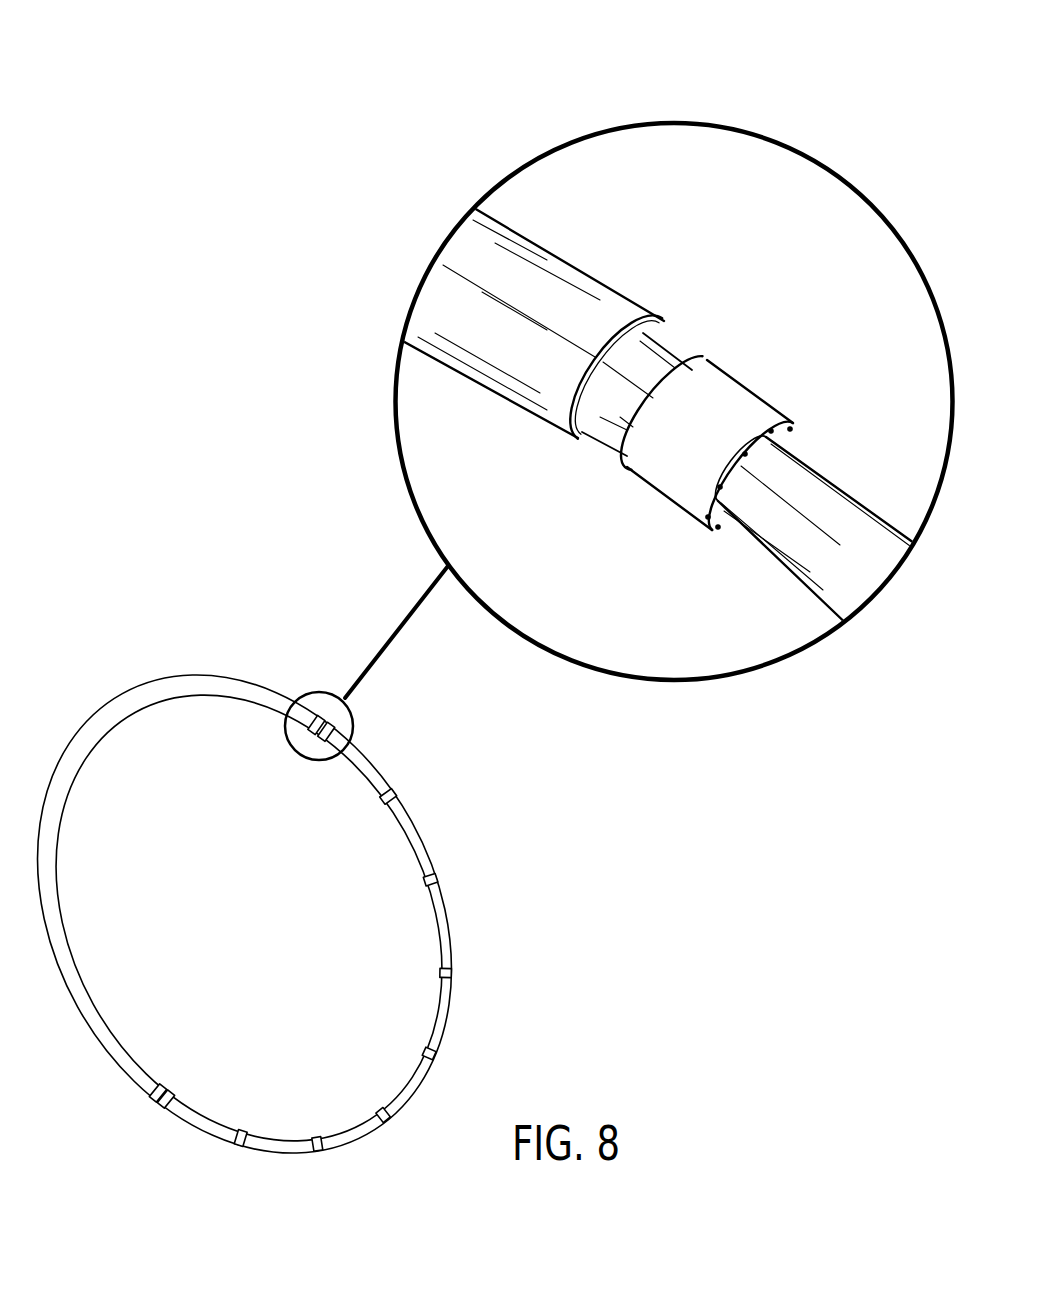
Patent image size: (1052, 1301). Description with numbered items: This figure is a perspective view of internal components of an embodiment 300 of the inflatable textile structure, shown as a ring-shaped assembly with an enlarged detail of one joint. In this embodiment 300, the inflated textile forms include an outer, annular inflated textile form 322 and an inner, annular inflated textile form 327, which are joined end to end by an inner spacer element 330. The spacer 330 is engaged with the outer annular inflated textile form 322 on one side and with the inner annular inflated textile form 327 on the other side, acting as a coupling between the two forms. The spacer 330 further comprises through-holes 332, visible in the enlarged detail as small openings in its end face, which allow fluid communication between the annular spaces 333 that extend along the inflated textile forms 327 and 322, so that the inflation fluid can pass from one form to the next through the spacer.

The embodiment 300 is at (137, 42).
The outer annular inflated textile form 322 is at (460, 313).
The inner annular inflated textile form 327 is at (823, 587).
The inner spacer element 330 is at (740, 408).
The through-holes 332 is at (798, 434).
The annular spaces 333 is at (745, 283).